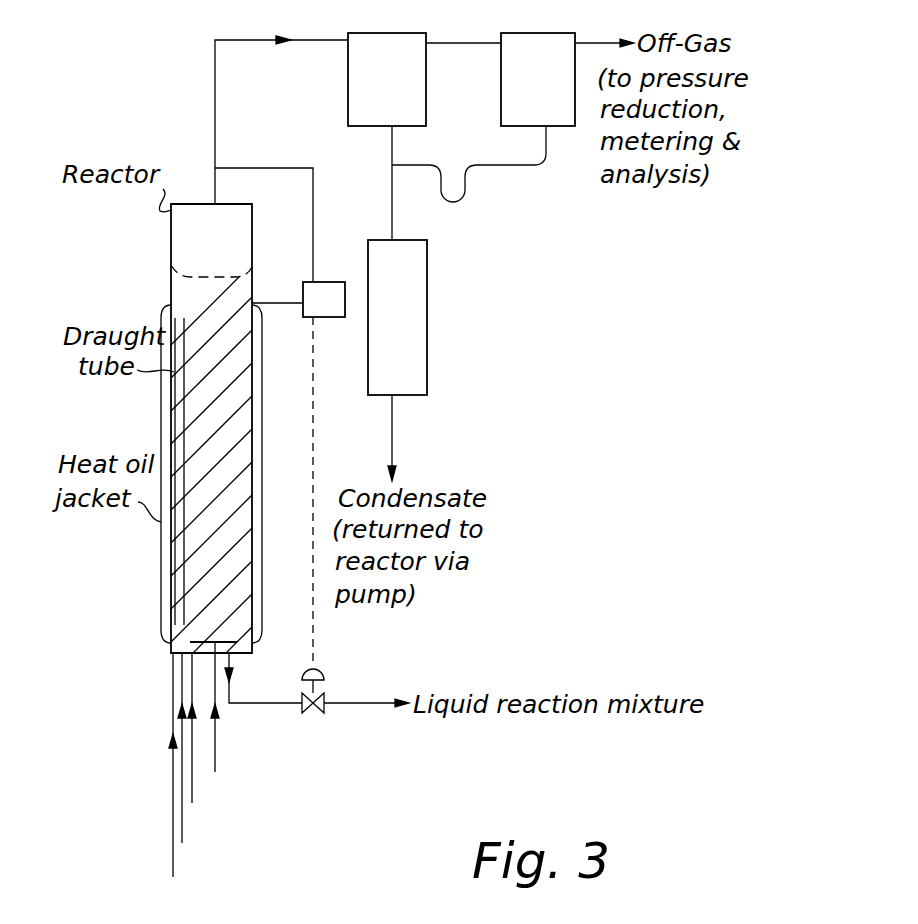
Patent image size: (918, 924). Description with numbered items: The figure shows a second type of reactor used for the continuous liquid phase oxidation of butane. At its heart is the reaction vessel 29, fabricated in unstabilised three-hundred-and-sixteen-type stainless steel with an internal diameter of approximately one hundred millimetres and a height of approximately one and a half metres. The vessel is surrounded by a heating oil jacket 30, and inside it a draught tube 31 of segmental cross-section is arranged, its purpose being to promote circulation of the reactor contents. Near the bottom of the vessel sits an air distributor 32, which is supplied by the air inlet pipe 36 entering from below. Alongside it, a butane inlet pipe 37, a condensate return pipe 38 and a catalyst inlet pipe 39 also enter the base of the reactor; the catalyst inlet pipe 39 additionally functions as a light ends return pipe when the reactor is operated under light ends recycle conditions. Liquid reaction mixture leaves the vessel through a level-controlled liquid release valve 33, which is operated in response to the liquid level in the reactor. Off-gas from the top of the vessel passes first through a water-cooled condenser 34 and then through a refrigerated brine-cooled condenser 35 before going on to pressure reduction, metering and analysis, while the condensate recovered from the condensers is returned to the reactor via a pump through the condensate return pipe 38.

The reaction vessel 29 is at (253, 288).
The heating oil jacket 30 is at (262, 487).
The draught tube 31 is at (180, 415).
The air distributor 32 is at (225, 641).
The level-controlled liquid release valve 33 is at (324, 688).
The water-cooled condenser 34 is at (372, 100).
The refrigerated brine-cooled condenser 35 is at (525, 100).
The air inlet pipe 36 is at (217, 752).
The butane inlet pipe 37 is at (192, 788).
The condensate return pipe 38 is at (173, 862).
The catalyst inlet pipe 39 is at (182, 834).